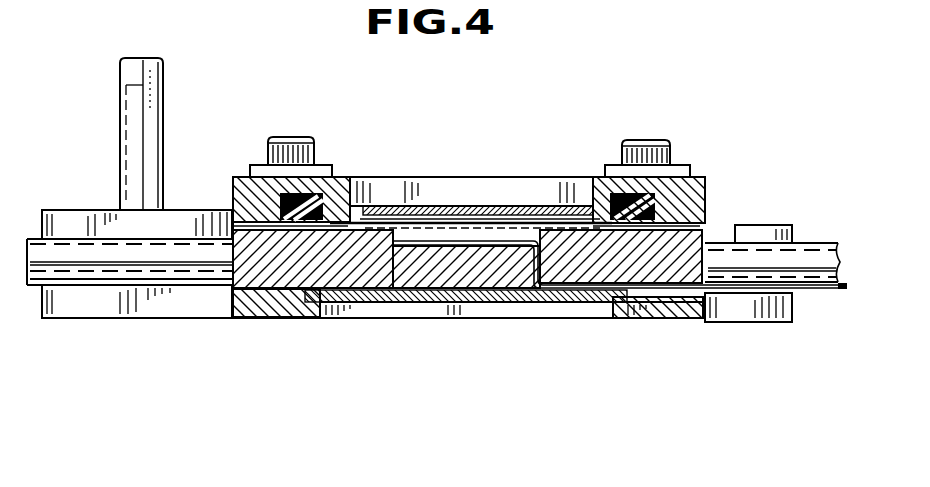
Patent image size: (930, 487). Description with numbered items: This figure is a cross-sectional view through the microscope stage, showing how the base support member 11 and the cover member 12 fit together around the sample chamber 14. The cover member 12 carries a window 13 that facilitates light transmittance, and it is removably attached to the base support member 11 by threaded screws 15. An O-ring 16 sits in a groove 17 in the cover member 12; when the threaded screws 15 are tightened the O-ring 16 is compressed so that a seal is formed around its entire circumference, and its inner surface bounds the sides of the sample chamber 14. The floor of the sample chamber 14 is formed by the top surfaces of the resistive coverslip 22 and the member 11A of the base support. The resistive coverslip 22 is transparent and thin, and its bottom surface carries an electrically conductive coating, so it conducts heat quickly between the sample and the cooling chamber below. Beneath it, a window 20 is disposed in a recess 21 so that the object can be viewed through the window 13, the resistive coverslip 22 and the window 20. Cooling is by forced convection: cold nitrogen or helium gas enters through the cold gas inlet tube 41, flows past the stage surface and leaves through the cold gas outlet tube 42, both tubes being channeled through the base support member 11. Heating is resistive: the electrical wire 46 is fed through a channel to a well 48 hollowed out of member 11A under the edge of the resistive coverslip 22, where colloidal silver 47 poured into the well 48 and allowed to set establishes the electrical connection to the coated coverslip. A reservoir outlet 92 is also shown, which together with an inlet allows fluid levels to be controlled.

The base support member 11 is at (707, 240).
The member 11A is at (707, 220).
The cover member 12 is at (667, 190).
The window 13 is at (465, 215).
The sample chamber 14 is at (498, 220).
The threaded screws 15 is at (283, 137).
The O-ring 16 is at (653, 207).
The groove 17 is at (333, 177).
The window 20 is at (597, 307).
The recess 21 is at (603, 310).
The resistive coverslip 22 is at (525, 223).
The cold gas inlet tube 41 is at (130, 265).
The cold gas outlet tube 42 is at (770, 241).
The electrical wire 46 is at (568, 283).
The colloidal silver 47 is at (393, 246).
The wells 48 is at (393, 240).
The outlet 92 is at (143, 113).